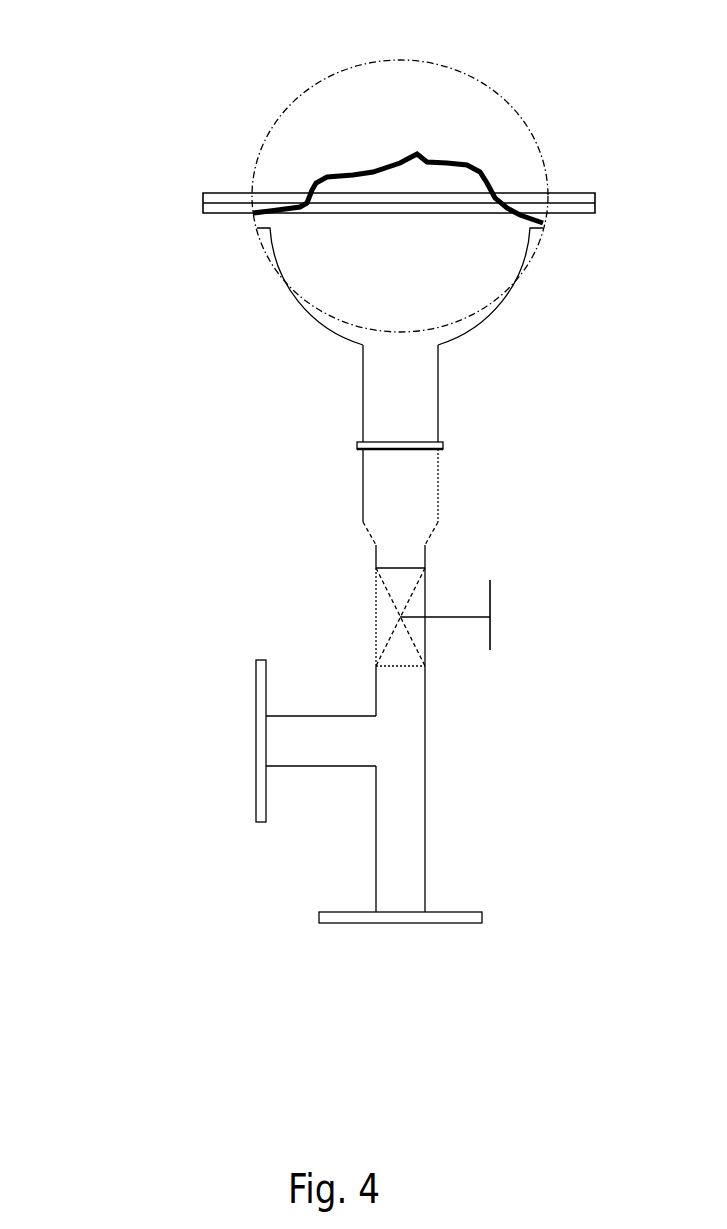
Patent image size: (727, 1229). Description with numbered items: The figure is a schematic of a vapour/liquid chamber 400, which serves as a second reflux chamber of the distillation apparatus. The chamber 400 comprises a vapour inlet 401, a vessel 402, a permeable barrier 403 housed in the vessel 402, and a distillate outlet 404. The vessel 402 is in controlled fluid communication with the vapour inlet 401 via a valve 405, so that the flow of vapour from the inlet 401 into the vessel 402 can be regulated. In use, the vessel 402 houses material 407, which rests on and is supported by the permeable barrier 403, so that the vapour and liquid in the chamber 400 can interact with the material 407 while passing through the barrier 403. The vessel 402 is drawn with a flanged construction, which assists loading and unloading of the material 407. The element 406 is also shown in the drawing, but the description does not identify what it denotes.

The sample preparation system 400 is at (451, 184).
The side inlet port 401 is at (238, 741).
The sample plate 402 is at (311, 163).
The neck and flange connection 403 is at (524, 411).
The outlet tube and base 404 is at (400, 832).
The valve 405 is at (496, 605).
The sample 406 is at (398, 158).
The collection bowl 407 is at (400, 286).